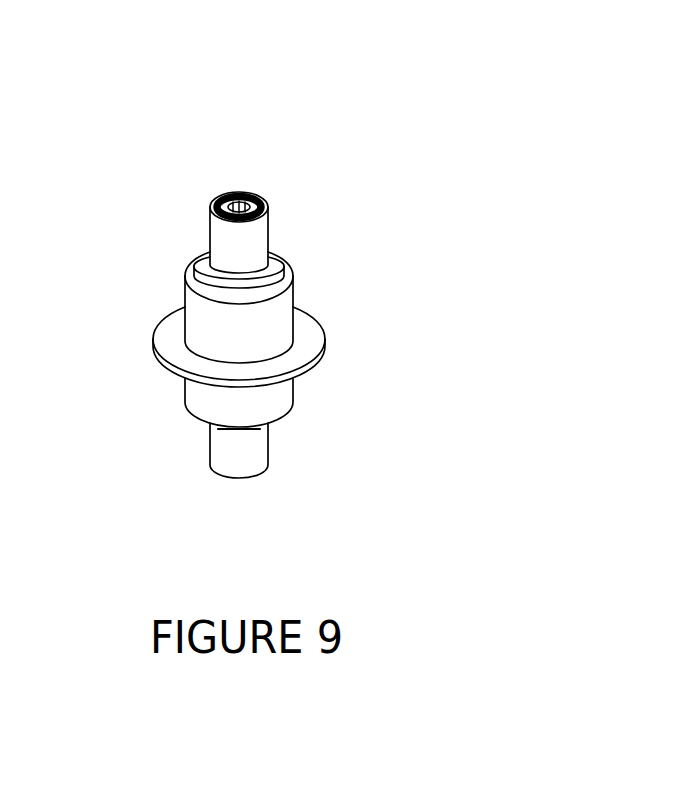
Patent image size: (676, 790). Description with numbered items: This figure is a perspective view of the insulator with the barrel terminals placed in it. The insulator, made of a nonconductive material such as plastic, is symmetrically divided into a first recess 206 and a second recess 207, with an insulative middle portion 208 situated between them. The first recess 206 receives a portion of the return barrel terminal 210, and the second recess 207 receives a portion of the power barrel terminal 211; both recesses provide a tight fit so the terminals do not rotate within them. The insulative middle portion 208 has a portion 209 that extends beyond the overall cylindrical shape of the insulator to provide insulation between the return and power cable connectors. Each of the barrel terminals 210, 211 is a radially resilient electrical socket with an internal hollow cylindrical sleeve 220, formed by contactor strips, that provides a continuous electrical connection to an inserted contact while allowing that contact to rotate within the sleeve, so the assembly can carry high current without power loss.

The internal hollow cylindrical sleeve 220 is at (213, 200).
The return barrel terminal 210 is at (268, 212).
The first recess 206 is at (252, 305).
The insulative middle portion 208 is at (303, 343).
The portion 209 is at (161, 357).
The second recess 207 is at (267, 395).
The power barrel terminal 211 is at (250, 450).